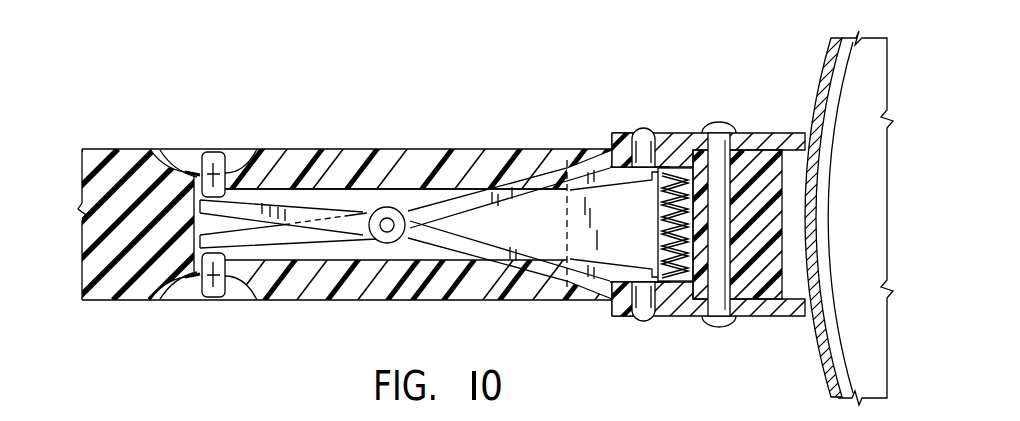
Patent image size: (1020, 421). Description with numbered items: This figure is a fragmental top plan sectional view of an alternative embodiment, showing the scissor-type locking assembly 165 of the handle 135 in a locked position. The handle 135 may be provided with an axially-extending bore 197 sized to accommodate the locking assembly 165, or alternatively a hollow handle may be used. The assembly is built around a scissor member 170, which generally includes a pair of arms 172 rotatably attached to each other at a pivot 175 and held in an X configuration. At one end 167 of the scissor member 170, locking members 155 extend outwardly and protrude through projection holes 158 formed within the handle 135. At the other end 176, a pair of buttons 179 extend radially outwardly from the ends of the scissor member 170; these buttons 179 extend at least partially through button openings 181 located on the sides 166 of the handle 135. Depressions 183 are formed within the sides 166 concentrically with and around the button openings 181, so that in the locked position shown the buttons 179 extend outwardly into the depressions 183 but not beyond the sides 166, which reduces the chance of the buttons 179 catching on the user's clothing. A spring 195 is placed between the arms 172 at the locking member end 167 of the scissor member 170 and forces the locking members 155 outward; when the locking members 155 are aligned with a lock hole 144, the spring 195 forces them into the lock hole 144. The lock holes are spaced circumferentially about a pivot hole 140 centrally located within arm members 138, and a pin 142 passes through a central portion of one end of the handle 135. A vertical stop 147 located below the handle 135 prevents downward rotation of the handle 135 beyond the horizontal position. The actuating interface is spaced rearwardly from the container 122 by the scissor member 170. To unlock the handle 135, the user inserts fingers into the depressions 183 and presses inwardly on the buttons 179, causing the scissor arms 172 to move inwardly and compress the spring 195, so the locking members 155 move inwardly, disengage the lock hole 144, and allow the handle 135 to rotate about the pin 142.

The container 122 is at (828, 57).
The handle 135 is at (105, 147).
The arm members 138 is at (772, 133).
The pivot hole 140 is at (722, 126).
The pin 142 is at (723, 248).
The first lock hole 144 is at (665, 132).
The vertical stop 147 is at (537, 273).
The locking members 155 is at (647, 128).
The projection holes 158 is at (617, 138).
The scissor-type locking assembly 165 is at (339, 197).
The sides 166 is at (308, 148).
The locking member end 167 is at (614, 172).
The scissor member 170 is at (473, 192).
The scissor arms 172 is at (460, 207).
The pivot 175 is at (387, 233).
The other end 176 is at (247, 236).
The buttons 179 is at (210, 158).
The button openings 181 is at (200, 173).
The depressions 183 is at (170, 157).
The spring 195 is at (685, 220).
The axially-extending bore 197 is at (550, 213).